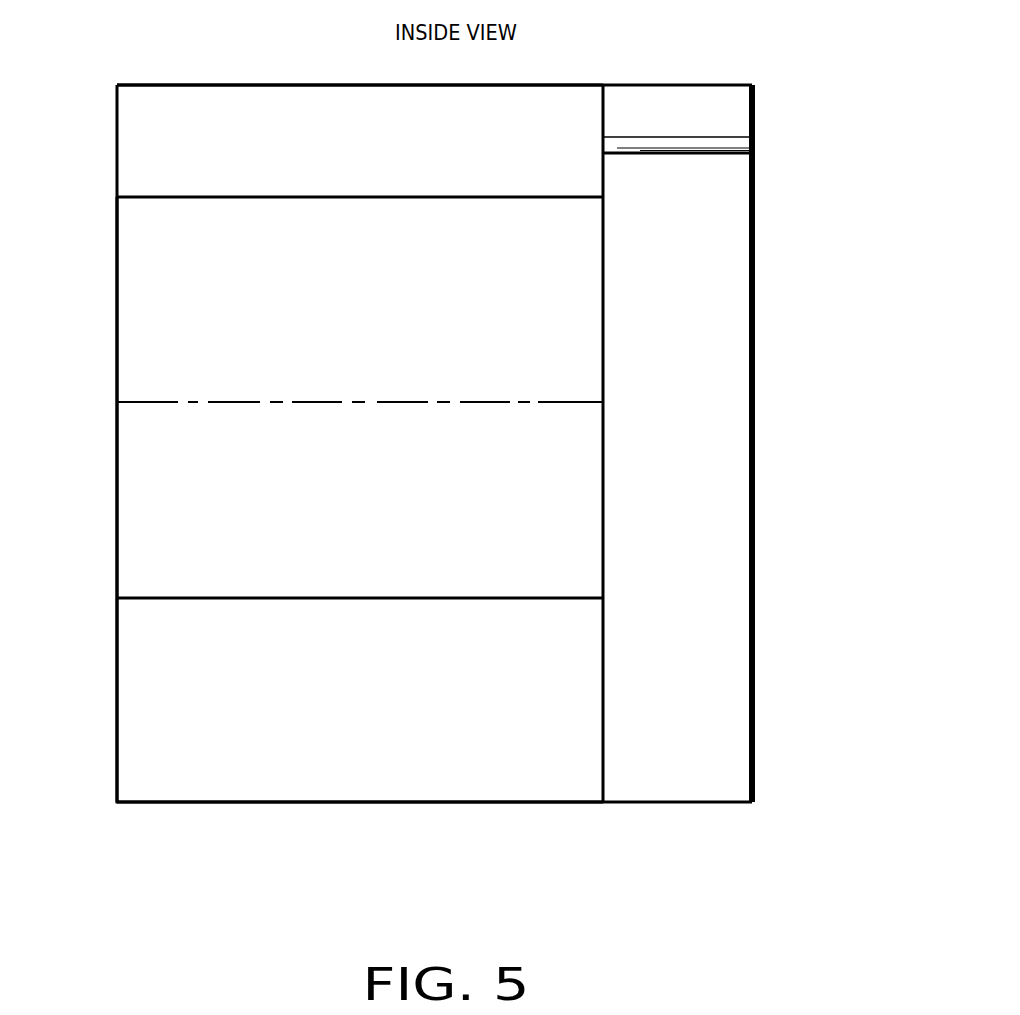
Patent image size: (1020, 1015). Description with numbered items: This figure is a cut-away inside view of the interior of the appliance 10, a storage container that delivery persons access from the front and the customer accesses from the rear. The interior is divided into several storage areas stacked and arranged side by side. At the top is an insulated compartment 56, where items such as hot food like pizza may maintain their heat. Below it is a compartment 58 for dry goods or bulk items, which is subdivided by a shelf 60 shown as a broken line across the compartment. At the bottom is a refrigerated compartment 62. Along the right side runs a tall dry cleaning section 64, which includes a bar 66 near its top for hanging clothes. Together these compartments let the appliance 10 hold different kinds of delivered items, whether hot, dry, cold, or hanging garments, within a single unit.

The appliance 10 is at (410, 805).
The insulated compartment 56 is at (517, 117).
The compartment 58 is at (148, 318).
The shelf 60 is at (538, 402).
The refrigerated compartment 62 is at (225, 745).
The dry cleaning section 64 is at (718, 313).
The bar 66 is at (707, 137).